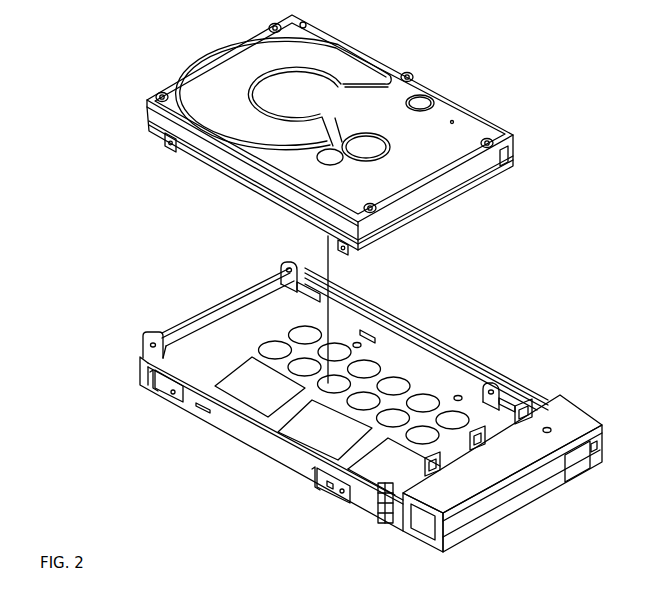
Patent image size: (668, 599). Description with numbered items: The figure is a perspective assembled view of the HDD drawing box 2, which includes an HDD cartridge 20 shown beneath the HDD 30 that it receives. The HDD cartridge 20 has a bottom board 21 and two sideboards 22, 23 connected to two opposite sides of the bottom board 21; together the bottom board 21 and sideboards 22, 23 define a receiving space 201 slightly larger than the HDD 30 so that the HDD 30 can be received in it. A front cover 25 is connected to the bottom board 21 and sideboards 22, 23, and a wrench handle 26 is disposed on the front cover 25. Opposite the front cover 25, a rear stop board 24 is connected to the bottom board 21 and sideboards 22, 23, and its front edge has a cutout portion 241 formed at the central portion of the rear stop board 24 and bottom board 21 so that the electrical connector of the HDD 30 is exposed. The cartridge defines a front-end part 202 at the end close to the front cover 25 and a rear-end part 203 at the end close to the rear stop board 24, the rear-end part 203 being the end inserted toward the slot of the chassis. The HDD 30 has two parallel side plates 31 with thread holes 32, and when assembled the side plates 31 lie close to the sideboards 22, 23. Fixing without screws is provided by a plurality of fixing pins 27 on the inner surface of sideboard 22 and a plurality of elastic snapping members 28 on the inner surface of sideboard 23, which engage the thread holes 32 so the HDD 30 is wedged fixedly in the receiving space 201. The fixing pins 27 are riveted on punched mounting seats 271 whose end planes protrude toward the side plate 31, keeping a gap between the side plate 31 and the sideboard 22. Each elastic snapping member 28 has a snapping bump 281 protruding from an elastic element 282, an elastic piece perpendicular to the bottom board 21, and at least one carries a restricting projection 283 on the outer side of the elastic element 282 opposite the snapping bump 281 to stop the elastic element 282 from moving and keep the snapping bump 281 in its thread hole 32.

The HDD drawing box 2 is at (326, 408).
The HDD cartridge 20 is at (320, 408).
The bottom board 21 is at (395, 360).
The sideboard 22 is at (370, 300).
The sideboard 23 is at (237, 422).
The rear stop board 24 is at (173, 343).
The front cover 25 is at (573, 420).
The wrench handle 26 is at (527, 493).
The fixing pin 27 is at (320, 272).
The elastic snapping member 28 is at (211, 455).
The HDD 30 is at (427, 80).
The side plate 31 is at (233, 173).
The thread hole 32 is at (168, 145).
The receiving space 201 is at (443, 385).
The front-end part 202 is at (377, 523).
The rear-end part 203 is at (117, 363).
The cutout portion 241 is at (227, 327).
The mounting seat 271 is at (340, 288).
The snapping bump 281 is at (170, 397).
The elastic element 282 is at (163, 390).
The restricting projection 283 is at (327, 482).